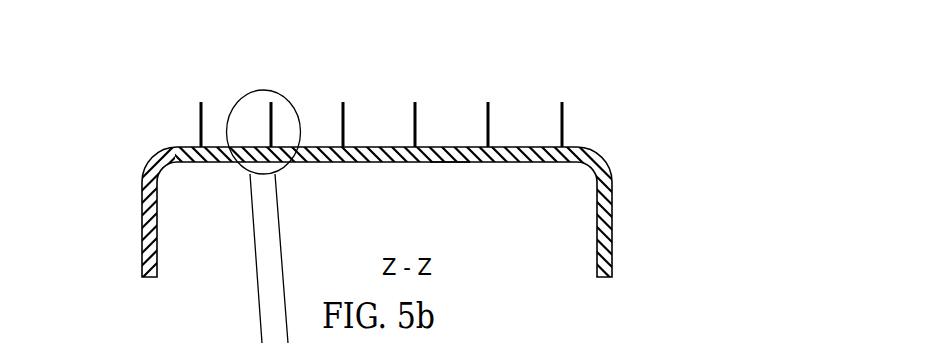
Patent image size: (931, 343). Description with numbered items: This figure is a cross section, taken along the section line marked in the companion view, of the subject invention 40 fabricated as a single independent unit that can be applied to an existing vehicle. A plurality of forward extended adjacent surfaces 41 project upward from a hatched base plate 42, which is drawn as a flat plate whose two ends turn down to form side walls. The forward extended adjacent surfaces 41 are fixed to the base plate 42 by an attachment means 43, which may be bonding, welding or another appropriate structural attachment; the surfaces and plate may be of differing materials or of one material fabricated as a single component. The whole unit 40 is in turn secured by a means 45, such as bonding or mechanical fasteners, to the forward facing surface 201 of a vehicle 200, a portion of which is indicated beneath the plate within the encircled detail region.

The subject invention 40 is at (353, 67).
The forward extended adjacent surfaces 41 is at (488, 128).
The base plate 42 is at (520, 147).
The attachment means 43 is at (565, 147).
The attachment means to vehicle 45 is at (442, 150).
The vehicle 200 is at (297, 163).
The forward facing surface 201 is at (193, 147).